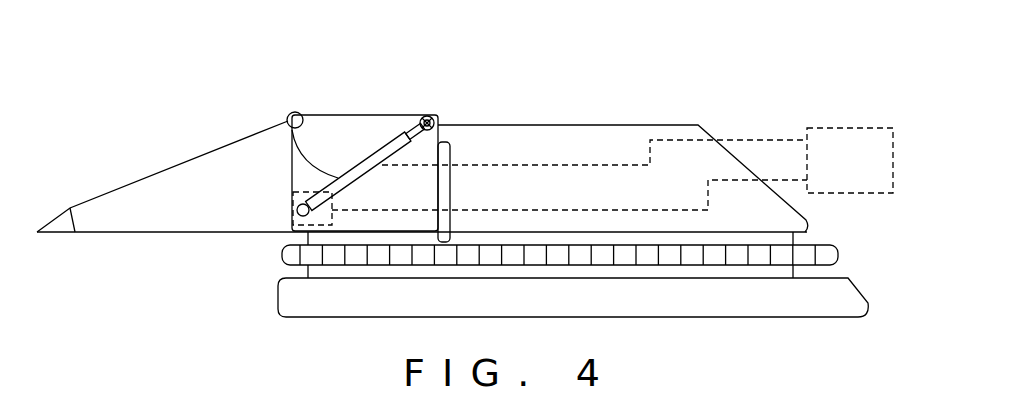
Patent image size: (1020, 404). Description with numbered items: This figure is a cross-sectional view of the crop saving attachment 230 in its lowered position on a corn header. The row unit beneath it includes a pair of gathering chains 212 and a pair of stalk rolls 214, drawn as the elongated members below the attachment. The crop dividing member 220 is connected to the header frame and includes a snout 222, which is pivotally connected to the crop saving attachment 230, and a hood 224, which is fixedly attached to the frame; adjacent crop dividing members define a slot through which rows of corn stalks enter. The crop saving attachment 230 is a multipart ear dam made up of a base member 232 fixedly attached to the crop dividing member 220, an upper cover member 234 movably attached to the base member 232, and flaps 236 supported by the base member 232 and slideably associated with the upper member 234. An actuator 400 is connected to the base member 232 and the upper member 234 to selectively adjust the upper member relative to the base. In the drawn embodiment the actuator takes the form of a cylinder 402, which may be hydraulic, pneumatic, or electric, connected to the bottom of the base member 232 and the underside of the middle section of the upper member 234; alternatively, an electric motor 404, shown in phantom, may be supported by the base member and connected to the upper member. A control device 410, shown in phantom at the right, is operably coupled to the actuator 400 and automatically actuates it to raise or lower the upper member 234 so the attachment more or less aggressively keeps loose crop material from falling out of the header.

The gathering chains 212 is at (828, 253).
The stalk rolls 214 is at (775, 318).
The crop dividing member 220 is at (126, 160).
The snout 222 is at (128, 233).
The hood 224 is at (703, 130).
The crop saving attachment 230 is at (368, 92).
The base member 232 is at (360, 233).
The upper cover member 234 is at (412, 115).
The flaps 236 is at (452, 153).
The actuator 400 is at (361, 146).
The cylinder 402 is at (286, 121).
The electric motor 404 is at (293, 197).
The control device 410 is at (848, 128).